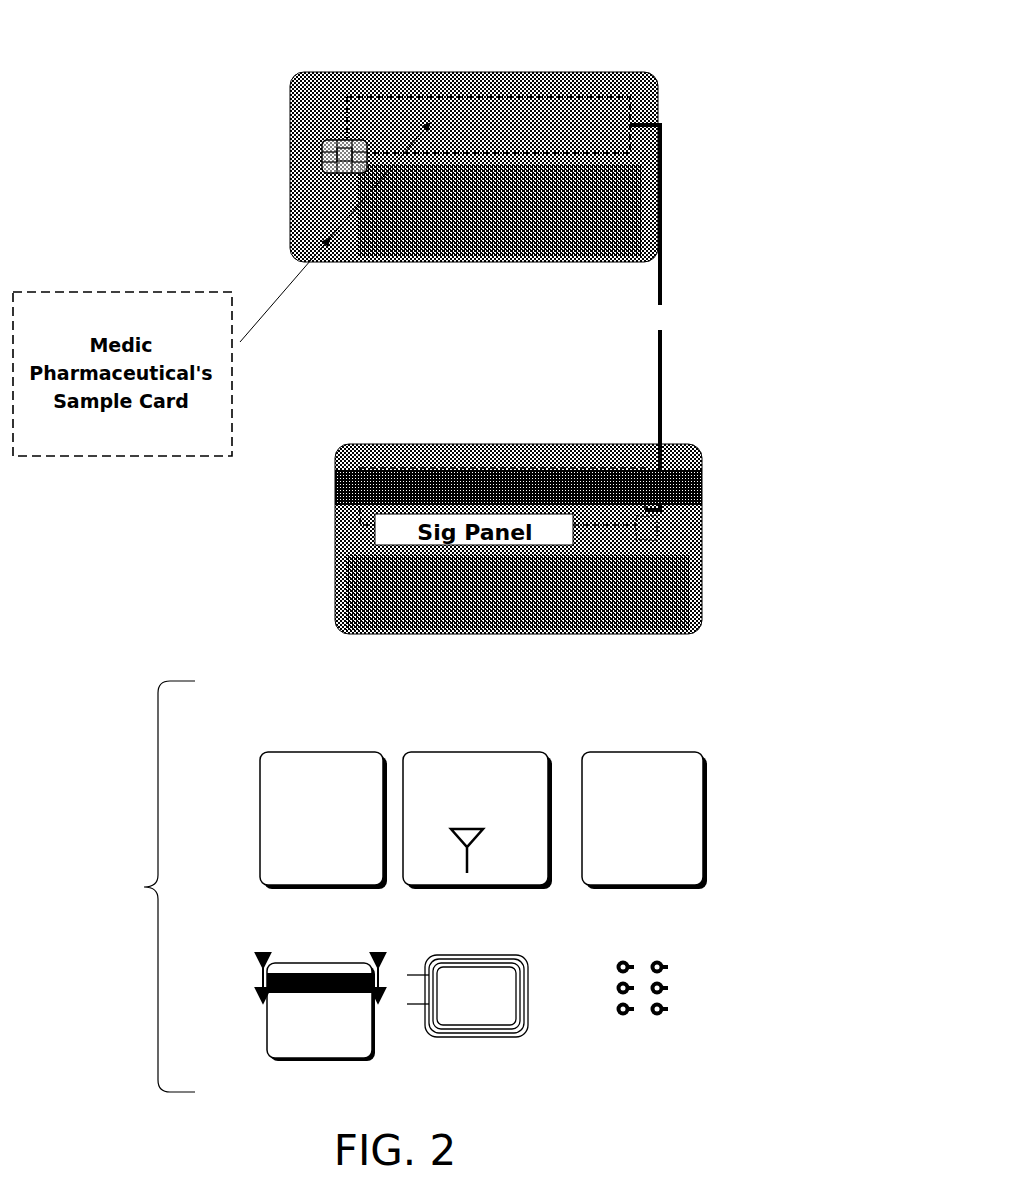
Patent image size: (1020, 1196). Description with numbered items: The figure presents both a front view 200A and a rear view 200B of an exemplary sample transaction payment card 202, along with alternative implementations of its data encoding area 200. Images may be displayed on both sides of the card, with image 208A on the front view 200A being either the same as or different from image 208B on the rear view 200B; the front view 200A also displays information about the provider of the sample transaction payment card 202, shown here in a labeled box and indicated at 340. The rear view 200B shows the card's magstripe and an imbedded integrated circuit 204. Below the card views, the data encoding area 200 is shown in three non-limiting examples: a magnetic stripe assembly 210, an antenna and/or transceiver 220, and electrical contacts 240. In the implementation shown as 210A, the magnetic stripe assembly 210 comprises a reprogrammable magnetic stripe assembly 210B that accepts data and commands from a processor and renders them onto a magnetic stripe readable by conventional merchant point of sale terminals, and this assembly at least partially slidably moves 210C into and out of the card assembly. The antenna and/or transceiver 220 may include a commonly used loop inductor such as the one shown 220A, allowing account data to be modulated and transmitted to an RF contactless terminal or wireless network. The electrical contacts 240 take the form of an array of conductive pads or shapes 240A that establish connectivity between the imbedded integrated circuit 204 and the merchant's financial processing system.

The data encoding area 200 is at (126, 886).
The front view 200A is at (624, 60).
The rear view 200B is at (411, 424).
The sample transaction payment card 202 is at (283, 91).
The imbedded integrated circuit 204 is at (325, 160).
The image 208A is at (397, 247).
The image 208B is at (457, 620).
The magnetic stripe assembly 210 is at (706, 473).
The magnetic stripe assembly implementation 210A is at (279, 978).
The reprogrammable magnetic stripe assembly 210B is at (290, 972).
The slidable movement 210C is at (263, 989).
The antenna and/or transceiver 220 is at (432, 752).
The loop inductor 220A is at (475, 1036).
The electrical contacts 240 is at (602, 752).
The array of conductive pads or shapes 240A is at (655, 1016).
The sample card indicia 340 is at (290, 208).